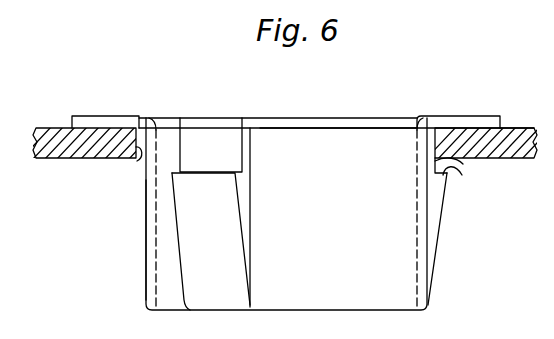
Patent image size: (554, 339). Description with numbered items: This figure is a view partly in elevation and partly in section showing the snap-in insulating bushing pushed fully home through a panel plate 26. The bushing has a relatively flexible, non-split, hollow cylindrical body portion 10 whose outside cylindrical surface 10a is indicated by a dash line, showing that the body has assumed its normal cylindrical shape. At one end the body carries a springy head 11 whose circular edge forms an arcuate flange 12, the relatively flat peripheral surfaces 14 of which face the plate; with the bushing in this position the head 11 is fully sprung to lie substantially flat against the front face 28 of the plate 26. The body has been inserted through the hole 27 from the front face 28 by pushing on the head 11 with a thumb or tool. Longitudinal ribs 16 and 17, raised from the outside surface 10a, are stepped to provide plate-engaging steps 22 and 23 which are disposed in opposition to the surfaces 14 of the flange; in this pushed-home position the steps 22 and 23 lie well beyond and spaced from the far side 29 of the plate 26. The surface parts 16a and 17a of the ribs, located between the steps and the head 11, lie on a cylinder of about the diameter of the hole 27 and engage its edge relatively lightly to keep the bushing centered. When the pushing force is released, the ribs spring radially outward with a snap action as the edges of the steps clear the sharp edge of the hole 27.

The body portion 10 is at (302, 297).
The outside cylindrical surface 10a is at (147, 238).
The head 11 is at (311, 118).
The arcuate flange 12 is at (88, 125).
The peripheral surfaces 14 is at (338, 132).
The rib 16 is at (442, 240).
The surface part of rib 16a is at (463, 164).
The rib 17 is at (246, 195).
The surface part of rib 17a is at (197, 137).
The step 22 is at (448, 168).
The step 23 is at (203, 174).
The panel plate 26 is at (522, 158).
The hole 27 is at (140, 163).
The front face 28 is at (533, 128).
The far side 29 is at (42, 162).